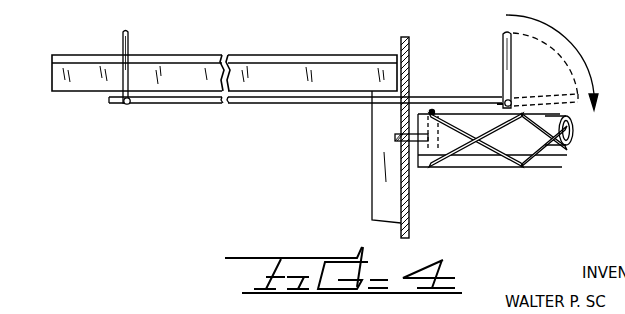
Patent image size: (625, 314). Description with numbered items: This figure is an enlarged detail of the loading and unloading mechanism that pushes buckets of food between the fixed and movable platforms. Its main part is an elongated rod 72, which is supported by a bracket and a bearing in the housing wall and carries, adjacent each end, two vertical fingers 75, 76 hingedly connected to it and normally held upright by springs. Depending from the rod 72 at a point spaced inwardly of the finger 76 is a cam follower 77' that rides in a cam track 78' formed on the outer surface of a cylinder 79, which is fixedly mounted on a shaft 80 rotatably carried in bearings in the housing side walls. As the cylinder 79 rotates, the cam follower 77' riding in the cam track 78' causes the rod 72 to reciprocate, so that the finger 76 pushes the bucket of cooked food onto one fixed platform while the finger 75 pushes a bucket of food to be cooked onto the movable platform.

The rod 72 is at (283, 104).
The finger 75 is at (127, 46).
The finger 76 is at (503, 36).
The cam follower 77' is at (454, 84).
The cam track 78' is at (498, 159).
The cylinder 79 is at (553, 161).
The shaft 80 is at (395, 137).